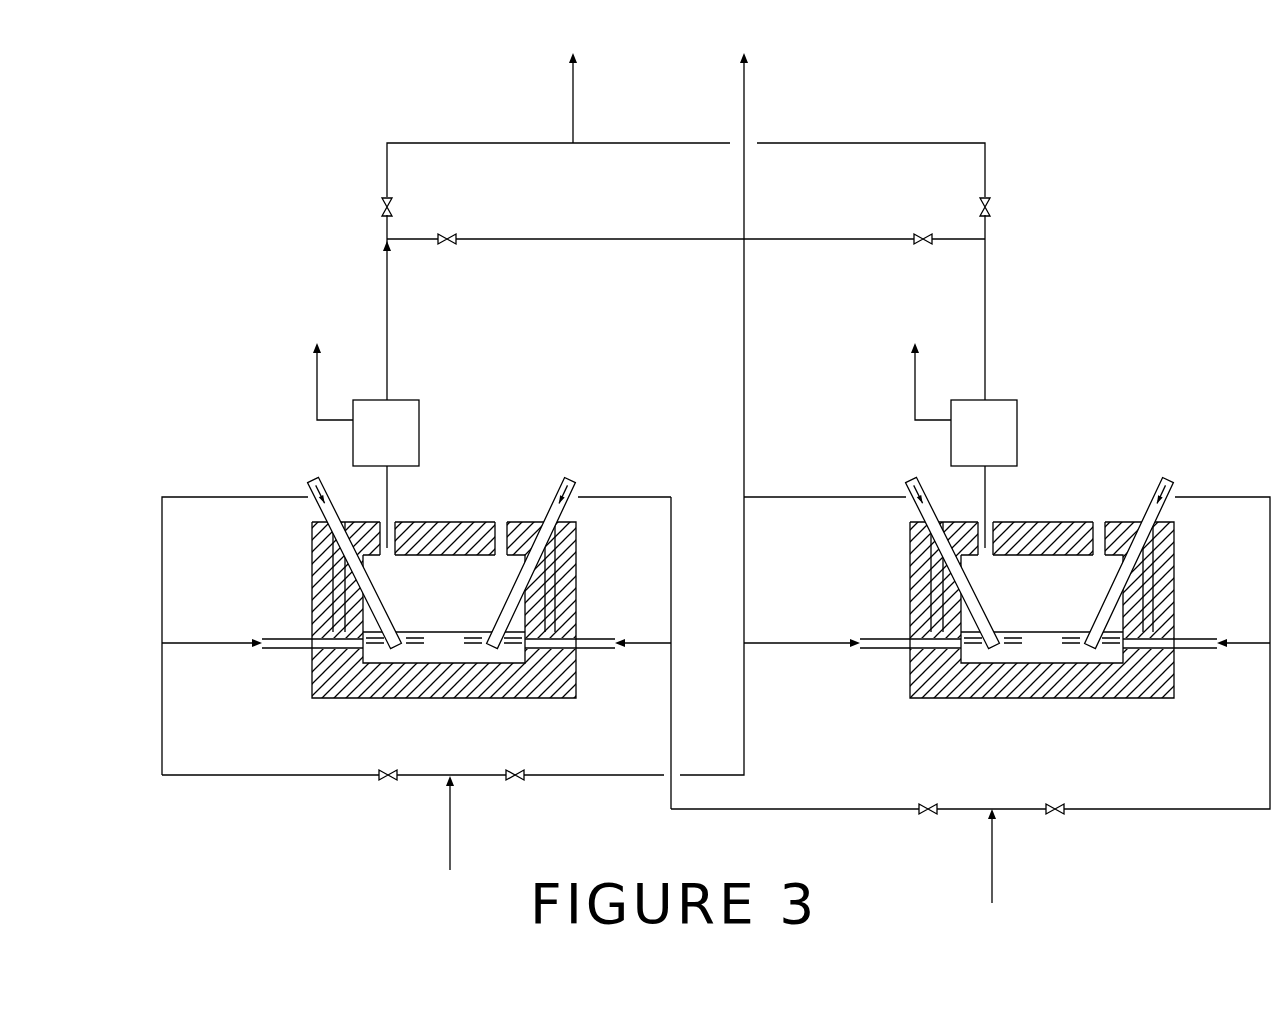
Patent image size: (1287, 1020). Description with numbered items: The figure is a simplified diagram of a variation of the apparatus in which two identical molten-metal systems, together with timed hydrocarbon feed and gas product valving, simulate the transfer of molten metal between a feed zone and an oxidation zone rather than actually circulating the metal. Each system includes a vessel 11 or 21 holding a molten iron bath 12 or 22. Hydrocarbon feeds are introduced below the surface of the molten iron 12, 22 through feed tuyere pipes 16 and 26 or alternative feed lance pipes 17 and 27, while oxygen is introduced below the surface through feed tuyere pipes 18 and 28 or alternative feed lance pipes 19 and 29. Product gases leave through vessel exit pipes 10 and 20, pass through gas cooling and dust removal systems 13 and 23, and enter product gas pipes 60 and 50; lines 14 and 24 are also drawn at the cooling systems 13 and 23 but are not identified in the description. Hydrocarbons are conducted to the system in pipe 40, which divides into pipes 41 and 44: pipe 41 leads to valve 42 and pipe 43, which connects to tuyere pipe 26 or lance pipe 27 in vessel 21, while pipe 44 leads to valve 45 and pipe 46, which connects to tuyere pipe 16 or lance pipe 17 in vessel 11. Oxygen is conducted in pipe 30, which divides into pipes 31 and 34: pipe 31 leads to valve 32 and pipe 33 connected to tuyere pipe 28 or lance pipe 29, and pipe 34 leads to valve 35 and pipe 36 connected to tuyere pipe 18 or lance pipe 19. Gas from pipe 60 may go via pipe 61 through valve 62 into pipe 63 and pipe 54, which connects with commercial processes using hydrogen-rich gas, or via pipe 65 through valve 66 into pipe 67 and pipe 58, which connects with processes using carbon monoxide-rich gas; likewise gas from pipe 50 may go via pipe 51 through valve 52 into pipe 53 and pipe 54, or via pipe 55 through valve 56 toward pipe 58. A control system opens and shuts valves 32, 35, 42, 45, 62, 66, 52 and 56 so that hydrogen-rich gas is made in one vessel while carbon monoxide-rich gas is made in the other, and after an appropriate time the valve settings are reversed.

The vessel exit pipe 10 is at (387, 493).
The vessel 11 is at (452, 688).
The molten iron bath 12 is at (404, 637).
The gas cooling system 13 is at (419, 434).
The first unit vent line 14 is at (317, 373).
The feed tuyere pipe 16 is at (280, 650).
The feed lance pipe 17 is at (307, 483).
The feed tuyere pipe 18 is at (592, 652).
The feed lance pipe 19 is at (577, 483).
The vessel exit pipe 20 is at (985, 493).
The vessel 21 is at (1048, 688).
The molten iron bath 22 is at (997, 637).
The gas cooling system 23 is at (1017, 434).
The second unit vent line 24 is at (915, 373).
The feed tuyere pipe 26 is at (877, 653).
The feed lance pipe 27 is at (905, 483).
The feed tuyere pipe 28 is at (1187, 652).
The feed lance pipe 29 is at (1175, 483).
The oxygen feed pipe 30 is at (995, 886).
The pipe 31 is at (1019, 792).
The valve 32 is at (1058, 829).
The pipe 33 is at (1170, 811).
The pipe 34 is at (964, 792).
The valve 35 is at (933, 829).
The pipe 36 is at (787, 811).
The hydrocarbon feed pipe 40 is at (455, 854).
The pipe 41 is at (478, 761).
The valve 42 is at (516, 795).
The pipe 43 is at (607, 778).
The pipe 44 is at (423, 761).
The valve 45 is at (392, 795).
The pipe 46 is at (277, 778).
The product gas pipe 50 is at (985, 348).
The pipe 51 is at (987, 230).
The valve 52 is at (1005, 203).
The pipe 53 is at (871, 154).
The pipe 54 is at (573, 110).
The pipe 55 is at (966, 236).
The valve 56 is at (925, 259).
The pipe 58 is at (744, 203).
The product gas pipe 60 is at (387, 348).
The pipe 61 is at (383, 232).
The valve 62 is at (365, 209).
The pipe 63 is at (558, 153).
The pipe 65 is at (414, 240).
The valve 66 is at (448, 259).
The pipe 67 is at (685, 226).